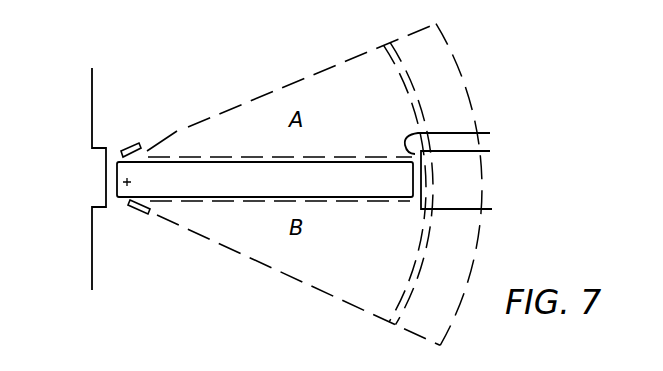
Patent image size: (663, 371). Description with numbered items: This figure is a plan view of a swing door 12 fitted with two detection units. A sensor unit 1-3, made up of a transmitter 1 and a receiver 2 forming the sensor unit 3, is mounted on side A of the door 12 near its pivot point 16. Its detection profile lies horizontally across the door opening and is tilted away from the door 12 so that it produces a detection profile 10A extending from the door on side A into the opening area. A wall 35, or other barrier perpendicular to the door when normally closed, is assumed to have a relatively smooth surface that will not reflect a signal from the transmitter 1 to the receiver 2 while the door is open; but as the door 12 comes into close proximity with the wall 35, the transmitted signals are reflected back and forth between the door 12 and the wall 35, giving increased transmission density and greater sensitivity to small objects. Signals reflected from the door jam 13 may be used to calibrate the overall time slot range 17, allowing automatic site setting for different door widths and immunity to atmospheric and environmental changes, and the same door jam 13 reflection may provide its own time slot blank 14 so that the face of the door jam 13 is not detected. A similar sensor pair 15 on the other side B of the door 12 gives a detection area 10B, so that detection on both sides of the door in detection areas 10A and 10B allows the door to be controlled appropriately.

The transmitter 1 is at (137, 146).
The receiver 2 is at (150, 155).
The sensor unit 3 is at (150, 147).
The detection profile 10A is at (307, 92).
The detection area 10B is at (303, 265).
The swing door 12 is at (300, 193).
The door jam 13 is at (490, 133).
The time slot blank 14 is at (385, 46).
The sensor pair 15 is at (139, 214).
The pivot point 16 is at (120, 182).
The time slot range 17 is at (466, 97).
The wall 35 is at (92, 115).